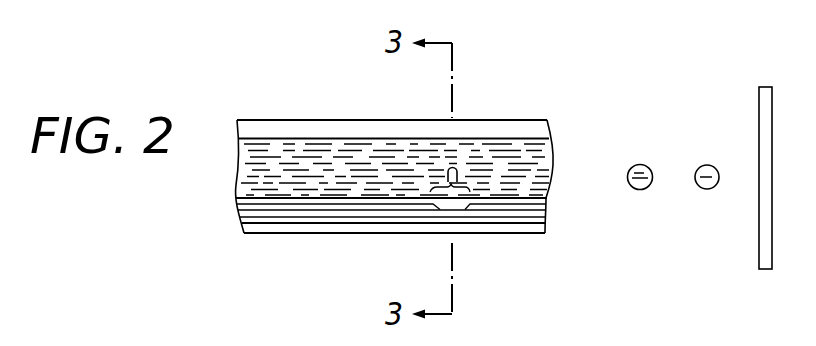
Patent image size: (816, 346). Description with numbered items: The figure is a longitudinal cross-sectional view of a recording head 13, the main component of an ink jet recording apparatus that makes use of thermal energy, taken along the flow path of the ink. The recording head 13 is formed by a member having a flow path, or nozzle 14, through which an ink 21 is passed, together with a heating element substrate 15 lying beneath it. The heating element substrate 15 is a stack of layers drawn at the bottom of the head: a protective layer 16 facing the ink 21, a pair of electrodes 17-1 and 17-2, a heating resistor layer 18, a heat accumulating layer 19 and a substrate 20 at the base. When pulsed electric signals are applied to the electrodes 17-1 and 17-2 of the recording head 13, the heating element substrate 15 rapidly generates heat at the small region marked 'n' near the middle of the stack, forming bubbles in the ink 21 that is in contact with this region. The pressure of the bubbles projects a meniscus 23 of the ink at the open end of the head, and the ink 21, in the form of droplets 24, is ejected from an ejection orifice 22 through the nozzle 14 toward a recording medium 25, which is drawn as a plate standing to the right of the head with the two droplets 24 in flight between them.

The recording head 13 is at (325, 120).
The flow path (nozzle) 14 is at (378, 138).
The ink 21 is at (270, 143).
The meniscus 23 is at (552, 165).
The ejection orifice 22 is at (553, 195).
The heating element substrate 15 is at (223, 200).
The protective layer 16 is at (263, 204).
The electrode 17-1 is at (308, 210).
The electrode 17-2 is at (527, 207).
The heating resistor layer 18 is at (360, 213).
The heat accumulating layer 19 is at (410, 233).
The substrate 20 is at (490, 233).
The droplets 24 is at (722, 153).
The recording medium 25 is at (758, 110).